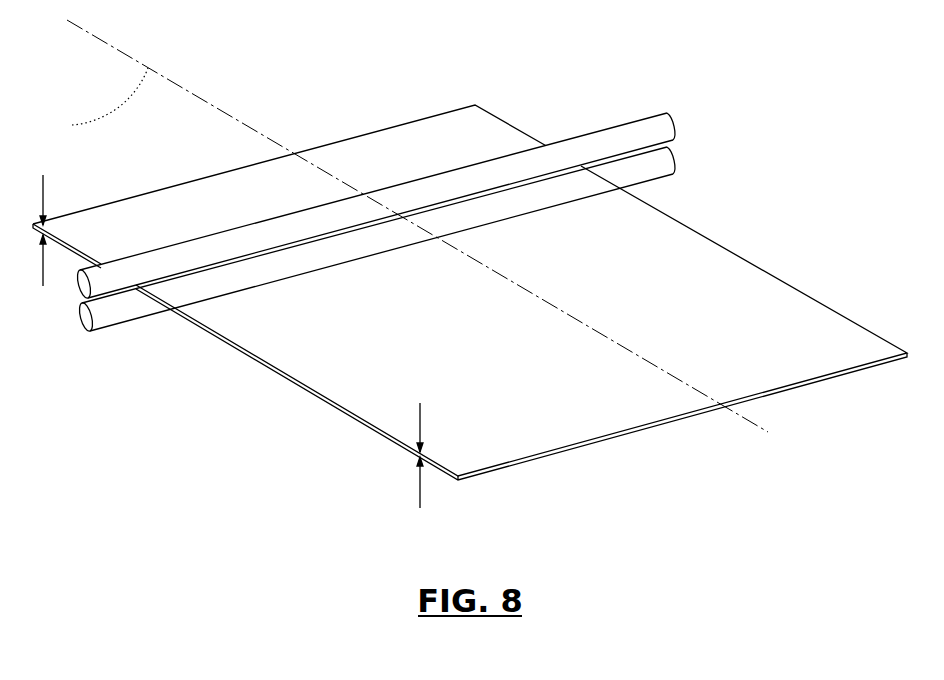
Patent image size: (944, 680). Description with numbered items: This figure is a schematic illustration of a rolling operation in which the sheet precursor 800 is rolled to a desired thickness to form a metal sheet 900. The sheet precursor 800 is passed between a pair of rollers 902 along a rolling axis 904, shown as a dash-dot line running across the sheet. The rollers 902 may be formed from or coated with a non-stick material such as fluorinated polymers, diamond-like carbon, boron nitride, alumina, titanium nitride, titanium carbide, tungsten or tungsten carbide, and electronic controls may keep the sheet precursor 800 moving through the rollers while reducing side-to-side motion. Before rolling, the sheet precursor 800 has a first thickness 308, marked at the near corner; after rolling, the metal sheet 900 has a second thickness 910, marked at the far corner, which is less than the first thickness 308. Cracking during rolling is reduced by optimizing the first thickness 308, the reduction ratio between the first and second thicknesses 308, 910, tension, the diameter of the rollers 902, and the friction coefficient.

The sheet precursor 800 is at (470, 246).
The metal sheet 900 is at (750, 302).
The rollers 902 is at (635, 125).
The rolling axis 904 is at (401, 226).
The first thickness 308 is at (48, 243).
The second thickness 910 is at (420, 470).